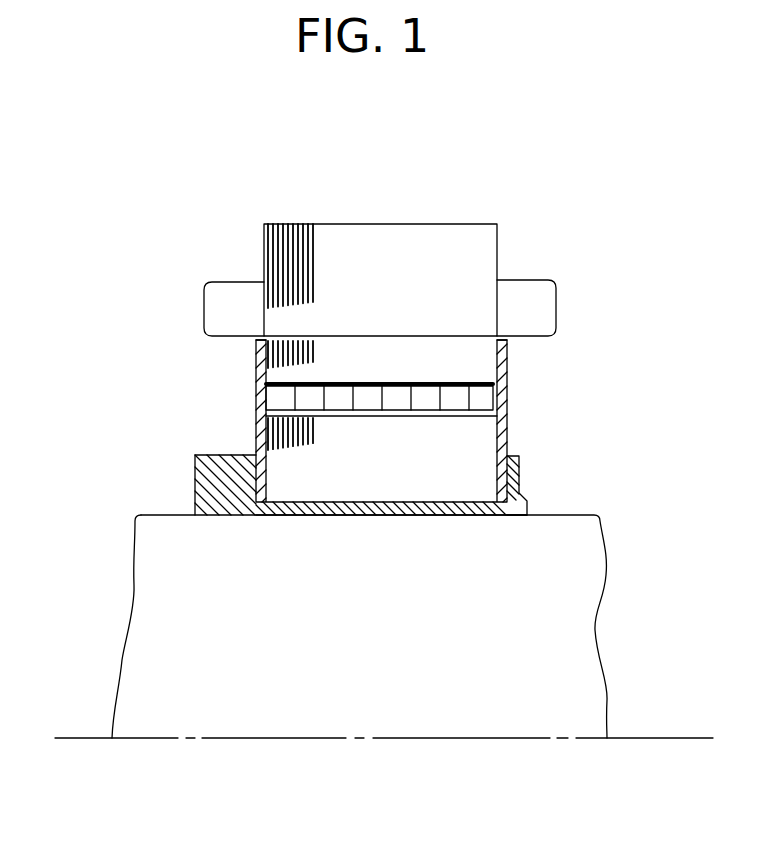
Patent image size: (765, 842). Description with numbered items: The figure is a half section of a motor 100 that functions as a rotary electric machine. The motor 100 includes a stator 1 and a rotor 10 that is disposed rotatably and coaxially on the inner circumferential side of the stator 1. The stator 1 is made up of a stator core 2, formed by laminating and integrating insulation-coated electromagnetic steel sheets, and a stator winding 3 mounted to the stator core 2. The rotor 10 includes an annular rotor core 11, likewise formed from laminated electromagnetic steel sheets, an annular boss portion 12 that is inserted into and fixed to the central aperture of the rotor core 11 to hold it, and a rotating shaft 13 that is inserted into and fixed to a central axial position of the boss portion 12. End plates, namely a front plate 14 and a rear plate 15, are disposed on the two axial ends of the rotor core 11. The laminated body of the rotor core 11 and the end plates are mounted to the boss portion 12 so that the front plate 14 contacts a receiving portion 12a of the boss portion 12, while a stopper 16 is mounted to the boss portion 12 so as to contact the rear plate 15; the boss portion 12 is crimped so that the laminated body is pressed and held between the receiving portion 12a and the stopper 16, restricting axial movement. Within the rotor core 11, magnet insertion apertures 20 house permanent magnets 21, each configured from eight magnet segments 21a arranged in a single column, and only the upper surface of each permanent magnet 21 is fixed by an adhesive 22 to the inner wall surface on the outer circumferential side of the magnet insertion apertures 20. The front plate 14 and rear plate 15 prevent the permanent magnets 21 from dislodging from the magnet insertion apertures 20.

The motor 100 is at (121, 123).
The stator 1 is at (627, 200).
The stator core 2 is at (493, 238).
The stator winding 3 is at (542, 296).
The rotor 10 is at (162, 453).
The rotor core 11 is at (487, 357).
The boss portion 12 is at (195, 495).
The receiving portion 12a is at (234, 462).
The rotating shaft 13 is at (140, 543).
The front plate 14 is at (258, 365).
The rear plate 15 is at (504, 436).
The stopper 16 is at (516, 470).
The magnet insertion apertures 20 is at (490, 412).
The permanent magnets 21 is at (497, 386).
The magnet segments 21a is at (280, 398).
The adhesive 22 is at (260, 386).